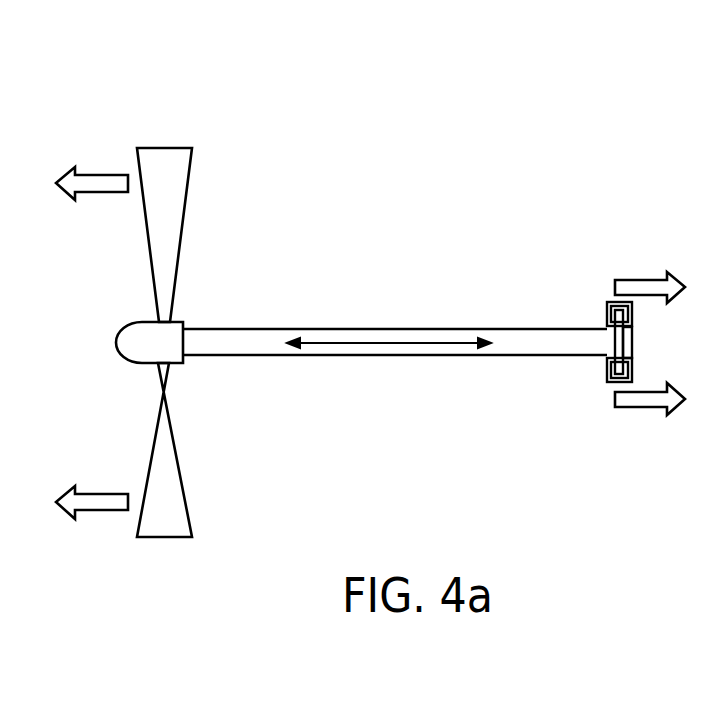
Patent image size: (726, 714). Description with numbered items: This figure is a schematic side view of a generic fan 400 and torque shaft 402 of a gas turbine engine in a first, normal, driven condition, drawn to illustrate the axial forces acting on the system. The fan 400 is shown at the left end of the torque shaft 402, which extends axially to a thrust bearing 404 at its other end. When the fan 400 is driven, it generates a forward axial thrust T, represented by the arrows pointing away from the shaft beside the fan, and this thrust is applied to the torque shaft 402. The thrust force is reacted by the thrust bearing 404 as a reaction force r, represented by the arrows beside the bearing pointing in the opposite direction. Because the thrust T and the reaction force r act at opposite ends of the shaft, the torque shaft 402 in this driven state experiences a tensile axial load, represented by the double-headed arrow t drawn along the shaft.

The fan 400 is at (170, 252).
The torque shaft 402 is at (510, 345).
The thrust bearing 404 is at (608, 312).
The tensile axial load t is at (333, 343).
The forward axial thrust T is at (100, 175).
The reaction force r is at (638, 407).